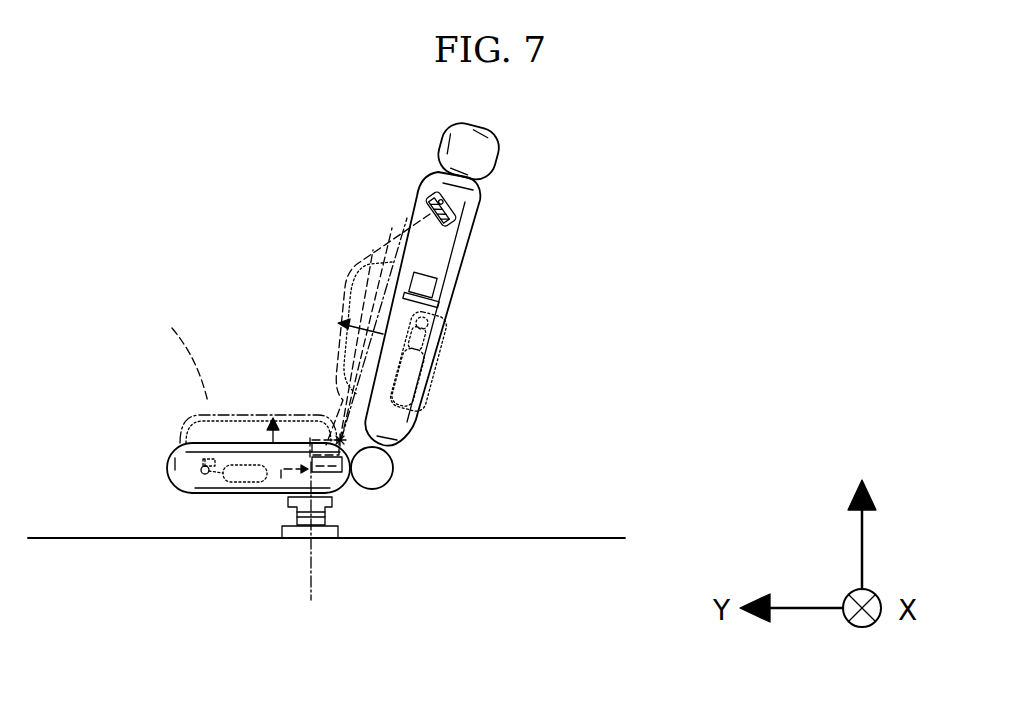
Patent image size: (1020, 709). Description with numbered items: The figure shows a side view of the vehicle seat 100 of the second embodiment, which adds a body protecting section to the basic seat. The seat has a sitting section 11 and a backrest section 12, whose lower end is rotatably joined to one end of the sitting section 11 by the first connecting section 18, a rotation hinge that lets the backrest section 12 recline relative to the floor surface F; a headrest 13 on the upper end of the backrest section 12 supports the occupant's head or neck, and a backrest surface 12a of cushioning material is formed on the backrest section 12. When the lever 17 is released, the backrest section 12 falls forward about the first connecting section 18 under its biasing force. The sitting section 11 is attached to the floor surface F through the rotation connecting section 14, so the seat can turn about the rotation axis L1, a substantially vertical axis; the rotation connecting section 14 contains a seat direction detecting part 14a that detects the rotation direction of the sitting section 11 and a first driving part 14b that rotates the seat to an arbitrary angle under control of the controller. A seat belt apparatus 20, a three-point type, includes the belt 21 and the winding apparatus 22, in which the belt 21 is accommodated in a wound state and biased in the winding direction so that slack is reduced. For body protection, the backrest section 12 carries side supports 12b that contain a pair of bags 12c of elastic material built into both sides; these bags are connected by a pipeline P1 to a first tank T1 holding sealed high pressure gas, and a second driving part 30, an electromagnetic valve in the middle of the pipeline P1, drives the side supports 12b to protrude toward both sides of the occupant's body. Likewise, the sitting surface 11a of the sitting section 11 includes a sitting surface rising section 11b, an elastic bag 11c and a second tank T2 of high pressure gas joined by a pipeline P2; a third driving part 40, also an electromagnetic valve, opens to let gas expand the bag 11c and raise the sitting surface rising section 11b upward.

The vehicle seat 100 is at (332, 409).
The sitting section 11 is at (167, 460).
The sitting surface 11a is at (217, 446).
The sitting surface rising section 11b is at (177, 348).
The bag 11c is at (183, 418).
The backrest section 12 is at (473, 194).
The backrest surface 12a is at (418, 208).
The side supports 12b is at (345, 281).
The pair of bags 12c is at (348, 310).
The headrest 13 is at (476, 143).
The rotation connecting section 14 is at (354, 549).
The seat direction detecting part 14a is at (305, 522).
The first driving part 14b is at (324, 514).
The lever 17 is at (280, 475).
The first connecting section 18 is at (381, 477).
The seat belt apparatus 20 is at (471, 265).
The belt 21 is at (338, 348).
The winding apparatus 22 is at (430, 291).
The second driving part 30 is at (429, 324).
The third driving part 40 is at (200, 478).
The pipeline P1 is at (423, 338).
The pipeline P2 is at (200, 470).
The first tank T1 is at (410, 383).
The second tank T2 is at (240, 474).
The floor surface F is at (557, 537).
The rotation axis L1 is at (313, 548).